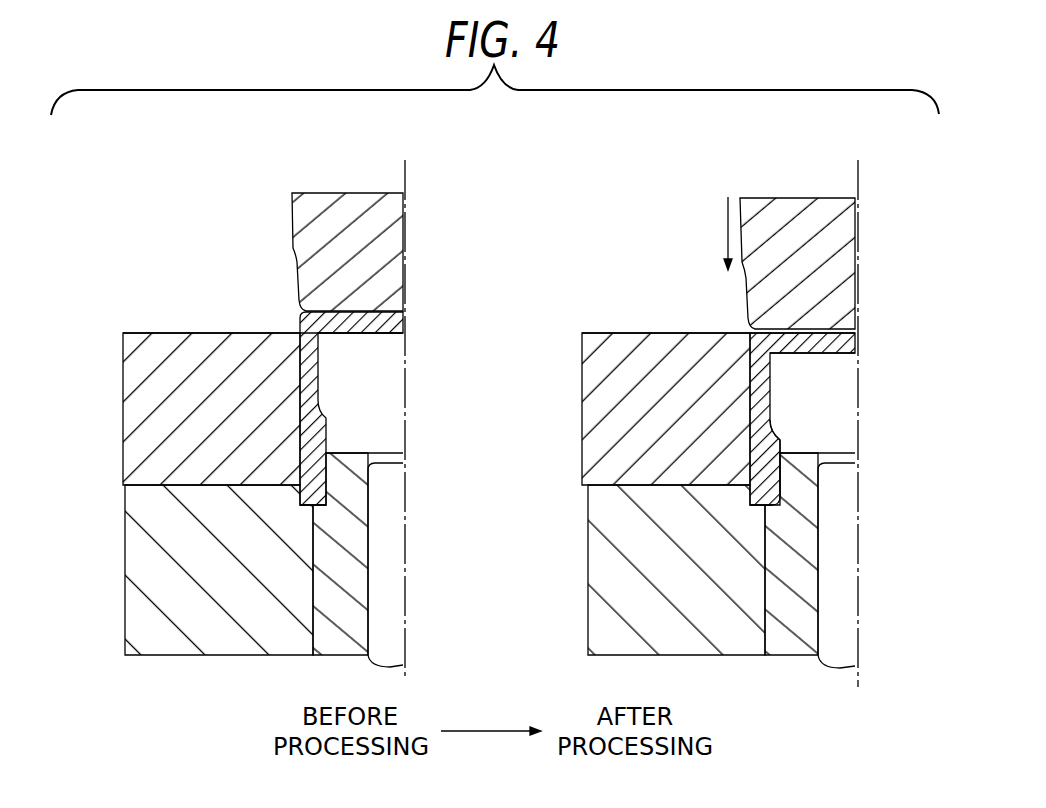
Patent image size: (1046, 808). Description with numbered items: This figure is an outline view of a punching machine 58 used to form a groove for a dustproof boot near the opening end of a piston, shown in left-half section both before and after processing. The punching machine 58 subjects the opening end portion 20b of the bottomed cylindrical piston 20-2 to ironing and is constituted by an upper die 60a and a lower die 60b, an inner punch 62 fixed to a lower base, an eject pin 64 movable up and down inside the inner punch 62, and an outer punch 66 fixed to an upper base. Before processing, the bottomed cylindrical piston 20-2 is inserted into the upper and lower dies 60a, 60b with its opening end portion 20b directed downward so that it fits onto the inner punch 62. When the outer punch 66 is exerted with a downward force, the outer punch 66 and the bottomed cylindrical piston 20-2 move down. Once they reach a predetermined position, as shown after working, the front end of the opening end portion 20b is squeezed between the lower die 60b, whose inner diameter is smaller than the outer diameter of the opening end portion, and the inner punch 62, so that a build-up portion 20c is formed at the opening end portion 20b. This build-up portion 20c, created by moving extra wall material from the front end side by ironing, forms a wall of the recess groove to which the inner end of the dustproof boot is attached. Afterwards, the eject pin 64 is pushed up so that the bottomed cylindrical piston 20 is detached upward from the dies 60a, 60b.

The bottomed cylindrical piston 20 is at (752, 362).
The bottomed cylindrical piston 20-2 is at (300, 362).
The opening end portion 20b is at (312, 504).
The build-up portion 20c is at (768, 488).
The punching machine 58 is at (546, 250).
The upper die 60a is at (137, 425).
The lower die 60b is at (137, 573).
The inner punch 62 is at (345, 580).
The eject pin 64 is at (392, 631).
The outer punch 66 is at (368, 258).